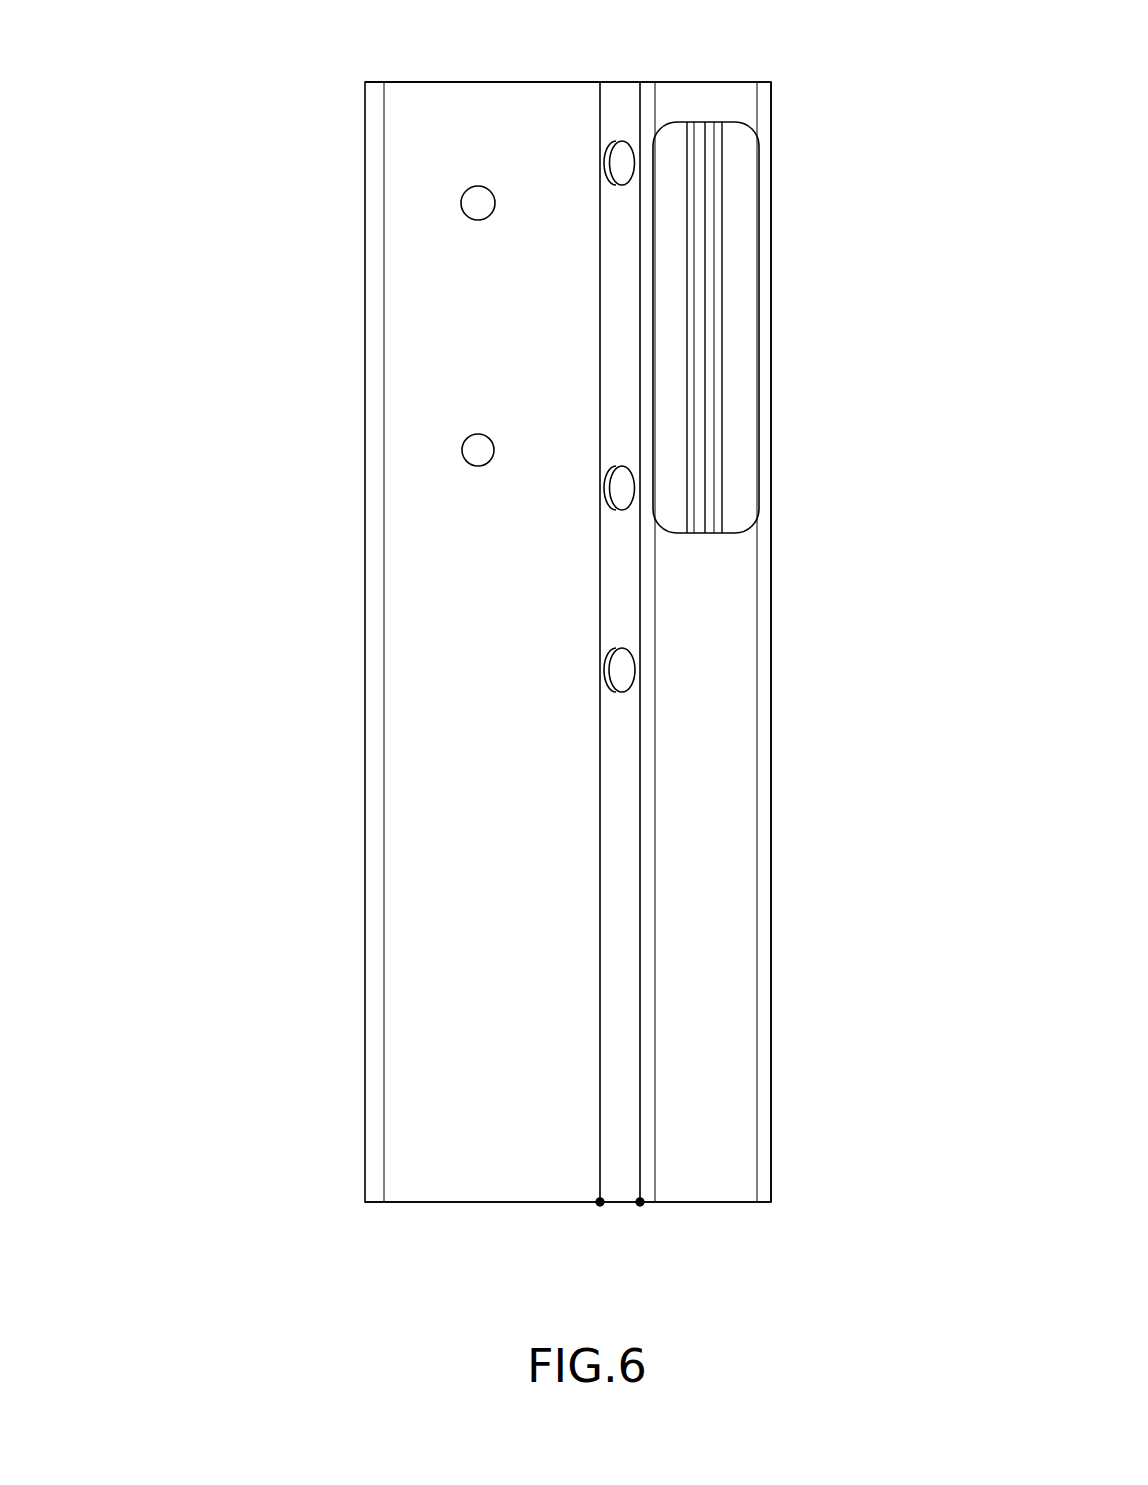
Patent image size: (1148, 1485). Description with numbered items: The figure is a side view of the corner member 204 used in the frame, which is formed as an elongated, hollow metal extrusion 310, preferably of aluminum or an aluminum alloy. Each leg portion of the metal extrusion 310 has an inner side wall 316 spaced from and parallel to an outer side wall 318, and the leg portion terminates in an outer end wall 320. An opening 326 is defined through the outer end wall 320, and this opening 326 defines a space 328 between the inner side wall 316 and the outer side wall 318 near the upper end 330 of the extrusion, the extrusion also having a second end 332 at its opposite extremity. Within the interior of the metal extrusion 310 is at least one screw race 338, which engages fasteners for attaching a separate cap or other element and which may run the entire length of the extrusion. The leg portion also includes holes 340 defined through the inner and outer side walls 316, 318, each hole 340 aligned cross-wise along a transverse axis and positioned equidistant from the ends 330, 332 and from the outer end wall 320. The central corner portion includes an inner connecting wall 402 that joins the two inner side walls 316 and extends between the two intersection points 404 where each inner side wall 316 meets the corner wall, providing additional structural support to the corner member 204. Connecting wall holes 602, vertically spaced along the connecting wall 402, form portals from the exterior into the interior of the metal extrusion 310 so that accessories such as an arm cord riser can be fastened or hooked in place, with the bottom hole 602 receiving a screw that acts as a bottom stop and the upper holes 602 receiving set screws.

The corner member 204 is at (258, 62).
The metal extrusion 310 is at (345, 997).
The inner side wall 316 is at (504, 986).
The outer side wall 318 is at (773, 578).
The outer end wall 320 is at (365, 520).
The opening 326 is at (765, 298).
The space 328 is at (742, 430).
The upper end 330 is at (532, 70).
The second end 332 is at (528, 1218).
The screw race 338 is at (685, 217).
The holes 340 is at (470, 222).
The inner connecting wall 402 is at (617, 105).
The intersection point 404 is at (600, 1202).
The connecting wall holes 602 is at (627, 692).